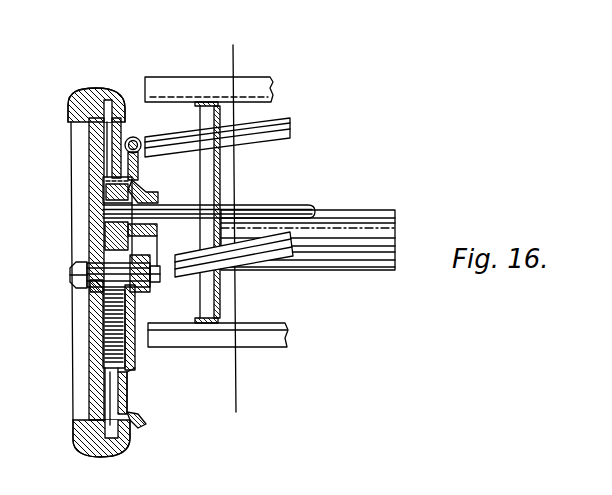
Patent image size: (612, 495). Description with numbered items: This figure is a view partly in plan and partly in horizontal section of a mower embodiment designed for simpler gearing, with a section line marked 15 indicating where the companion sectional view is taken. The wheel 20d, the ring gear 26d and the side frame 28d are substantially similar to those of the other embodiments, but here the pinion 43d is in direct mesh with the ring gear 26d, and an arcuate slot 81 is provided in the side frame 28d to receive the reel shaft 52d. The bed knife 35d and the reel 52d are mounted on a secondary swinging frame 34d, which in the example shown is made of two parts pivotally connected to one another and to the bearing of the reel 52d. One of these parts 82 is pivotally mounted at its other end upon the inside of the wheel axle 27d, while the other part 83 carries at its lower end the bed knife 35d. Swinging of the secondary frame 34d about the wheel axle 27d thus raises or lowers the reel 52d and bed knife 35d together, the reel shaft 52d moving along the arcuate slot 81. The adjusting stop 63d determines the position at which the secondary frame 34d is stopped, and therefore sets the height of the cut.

The wheel 20d is at (68, 122).
The adjusting stop 63d is at (129, 136).
The secondary swinging frame 34d is at (140, 168).
The pinion 43d is at (138, 189).
The part of secondary frame 83 is at (140, 196).
The reel shaft 52d is at (303, 210).
The bed knife 35d is at (386, 223).
The arcuate slot 81 is at (146, 241).
The part of secondary frame 82 is at (154, 291).
The wheel axle 27d is at (72, 283).
The ring gear 26d is at (118, 352).
The side frame 28d is at (140, 418).
The section line 15 is at (243, 57).